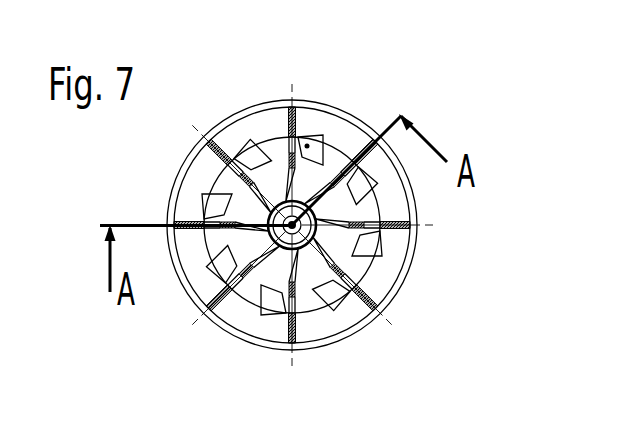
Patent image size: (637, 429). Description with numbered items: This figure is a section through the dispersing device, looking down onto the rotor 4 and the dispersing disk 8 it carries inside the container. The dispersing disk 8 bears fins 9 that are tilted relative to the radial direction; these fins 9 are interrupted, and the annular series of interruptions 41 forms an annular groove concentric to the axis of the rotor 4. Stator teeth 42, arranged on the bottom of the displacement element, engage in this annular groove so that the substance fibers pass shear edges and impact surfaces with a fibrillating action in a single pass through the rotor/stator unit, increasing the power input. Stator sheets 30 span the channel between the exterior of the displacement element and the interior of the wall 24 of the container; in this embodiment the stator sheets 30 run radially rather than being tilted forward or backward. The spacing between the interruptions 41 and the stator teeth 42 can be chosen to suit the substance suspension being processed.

The rotor 4 is at (255, 283).
The dispersing disk 8 is at (357, 207).
The fins 9 is at (308, 145).
The wall 24 is at (408, 265).
The stator sheets 30 is at (213, 140).
The interruptions 41 is at (362, 166).
The stator teeth 42 is at (285, 148).